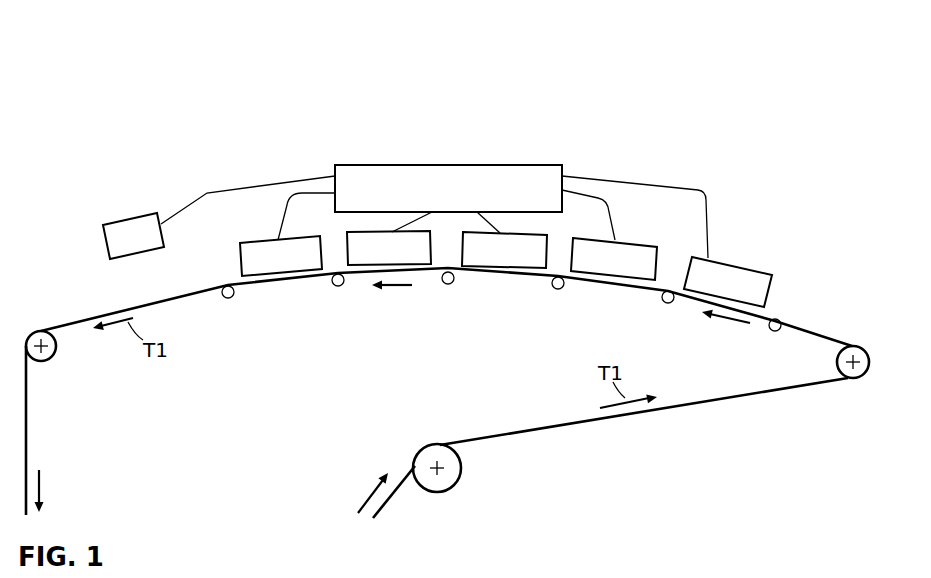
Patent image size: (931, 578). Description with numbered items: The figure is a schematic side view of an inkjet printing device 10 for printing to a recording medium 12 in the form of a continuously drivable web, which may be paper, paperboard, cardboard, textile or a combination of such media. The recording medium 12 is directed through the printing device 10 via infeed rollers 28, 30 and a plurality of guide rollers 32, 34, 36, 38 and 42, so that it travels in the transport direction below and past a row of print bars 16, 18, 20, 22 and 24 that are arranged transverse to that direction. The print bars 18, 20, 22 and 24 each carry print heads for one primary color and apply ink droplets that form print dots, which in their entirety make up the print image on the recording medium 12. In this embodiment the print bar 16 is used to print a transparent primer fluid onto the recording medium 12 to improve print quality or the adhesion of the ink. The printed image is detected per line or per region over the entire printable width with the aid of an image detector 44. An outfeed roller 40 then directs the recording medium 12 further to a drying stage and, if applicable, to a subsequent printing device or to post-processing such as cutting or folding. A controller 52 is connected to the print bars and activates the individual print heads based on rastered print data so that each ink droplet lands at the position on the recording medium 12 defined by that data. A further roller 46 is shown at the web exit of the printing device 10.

The printing device 10 is at (264, 83).
The recording medium 12 is at (27, 436).
The print bar 16 is at (735, 262).
The print bar 18 is at (632, 238).
The print bar 20 is at (490, 278).
The print bar 22 is at (358, 273).
The print bar 24 is at (276, 240).
The infeed roller 28 is at (427, 451).
The infeed roller 30 is at (853, 345).
The guide roller 32 is at (774, 331).
The guide roller 34 is at (660, 300).
The guide roller 36 is at (562, 289).
The guide roller 38 is at (448, 285).
The outfeed roller 40 is at (338, 287).
The guide roller 42 is at (233, 300).
The image detector 44 is at (125, 217).
The roller 46 is at (57, 358).
The controller 52 is at (335, 164).